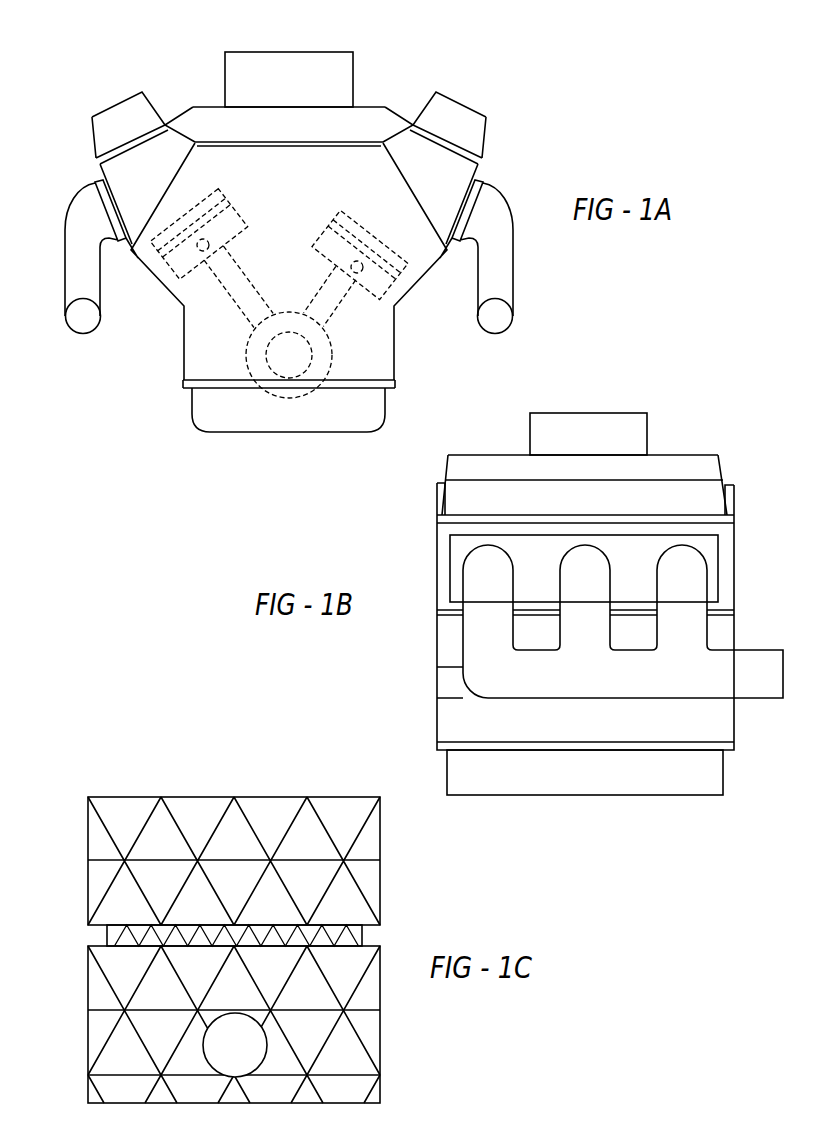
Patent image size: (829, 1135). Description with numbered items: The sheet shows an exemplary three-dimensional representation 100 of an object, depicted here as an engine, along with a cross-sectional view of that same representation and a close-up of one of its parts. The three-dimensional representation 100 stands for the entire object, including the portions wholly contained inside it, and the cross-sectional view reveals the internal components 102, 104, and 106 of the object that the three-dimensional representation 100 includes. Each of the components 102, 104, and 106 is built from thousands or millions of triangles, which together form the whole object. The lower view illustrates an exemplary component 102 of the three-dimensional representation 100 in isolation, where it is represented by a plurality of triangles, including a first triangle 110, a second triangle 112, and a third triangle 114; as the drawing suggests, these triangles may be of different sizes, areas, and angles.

In FIG. 1A, the 3d representation 100 is at (183, 43).
In FIG. 1B, the 3d representation 100 is at (690, 438).
In FIG. 1B, the internal component 102 is at (500, 450).
In FIG. 1B, the internal component 104 is at (597, 413).
In FIG. 1C, the internal component 104 is at (210, 765).
In FIG. 1B, the internal component 106 is at (480, 575).
In FIG. 1C, the first triangle 110 is at (103, 848).
In FIG. 1C, the second triangle 112 is at (115, 932).
In FIG. 1C, the third triangle 114 is at (102, 990).